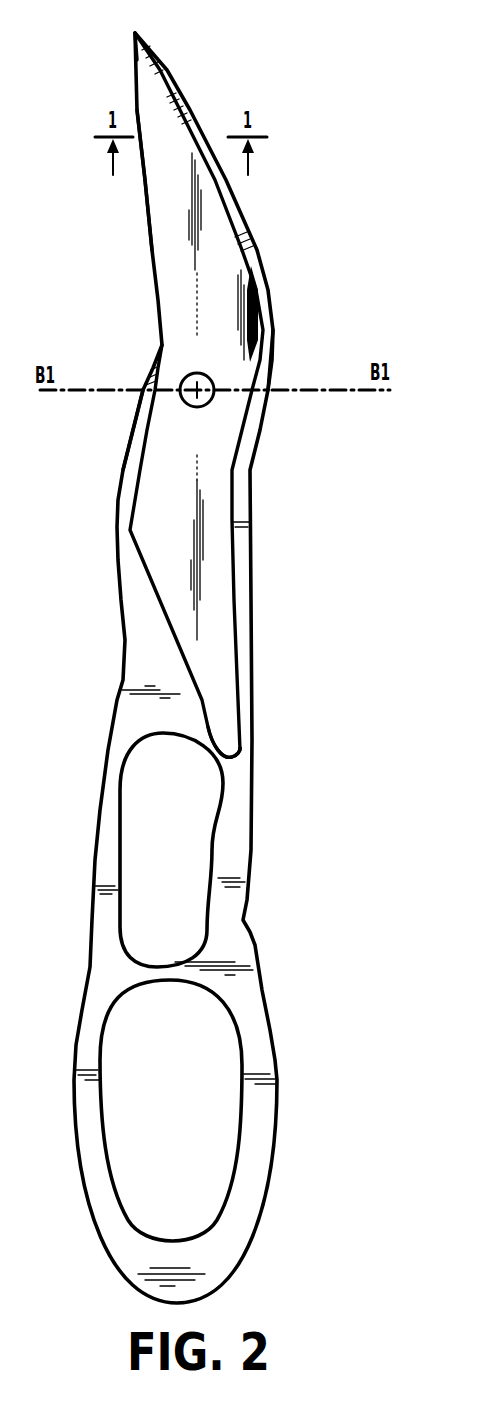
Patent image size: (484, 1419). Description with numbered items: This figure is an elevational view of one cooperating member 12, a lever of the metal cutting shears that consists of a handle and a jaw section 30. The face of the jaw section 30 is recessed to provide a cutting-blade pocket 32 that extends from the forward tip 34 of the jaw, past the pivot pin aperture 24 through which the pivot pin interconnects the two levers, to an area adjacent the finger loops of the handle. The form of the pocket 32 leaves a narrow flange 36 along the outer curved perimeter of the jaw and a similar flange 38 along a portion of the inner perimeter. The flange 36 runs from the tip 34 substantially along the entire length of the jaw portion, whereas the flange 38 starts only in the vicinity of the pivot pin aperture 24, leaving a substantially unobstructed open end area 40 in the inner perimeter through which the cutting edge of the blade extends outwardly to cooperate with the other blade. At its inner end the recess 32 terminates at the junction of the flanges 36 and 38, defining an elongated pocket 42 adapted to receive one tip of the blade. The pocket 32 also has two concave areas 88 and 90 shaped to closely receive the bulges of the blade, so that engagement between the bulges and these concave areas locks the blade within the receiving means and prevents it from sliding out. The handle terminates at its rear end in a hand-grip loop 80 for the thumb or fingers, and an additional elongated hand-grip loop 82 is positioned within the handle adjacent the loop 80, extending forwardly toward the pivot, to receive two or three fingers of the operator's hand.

The cooperating member 12 is at (237, 863).
The pivot pin aperture 24 is at (212, 380).
The jaw section 30 is at (237, 298).
The cutting-blade pocket 32 is at (172, 272).
The forward tip 34 is at (136, 33).
The flange 36 is at (265, 372).
The flange 38 is at (130, 440).
The open end area 40 is at (160, 210).
The elongated pocket 42 is at (228, 745).
The hand-grip loop 80 is at (223, 1135).
The hand-grip loop 82 is at (140, 837).
The concave area 88 is at (217, 226).
The concave area 90 is at (150, 557).